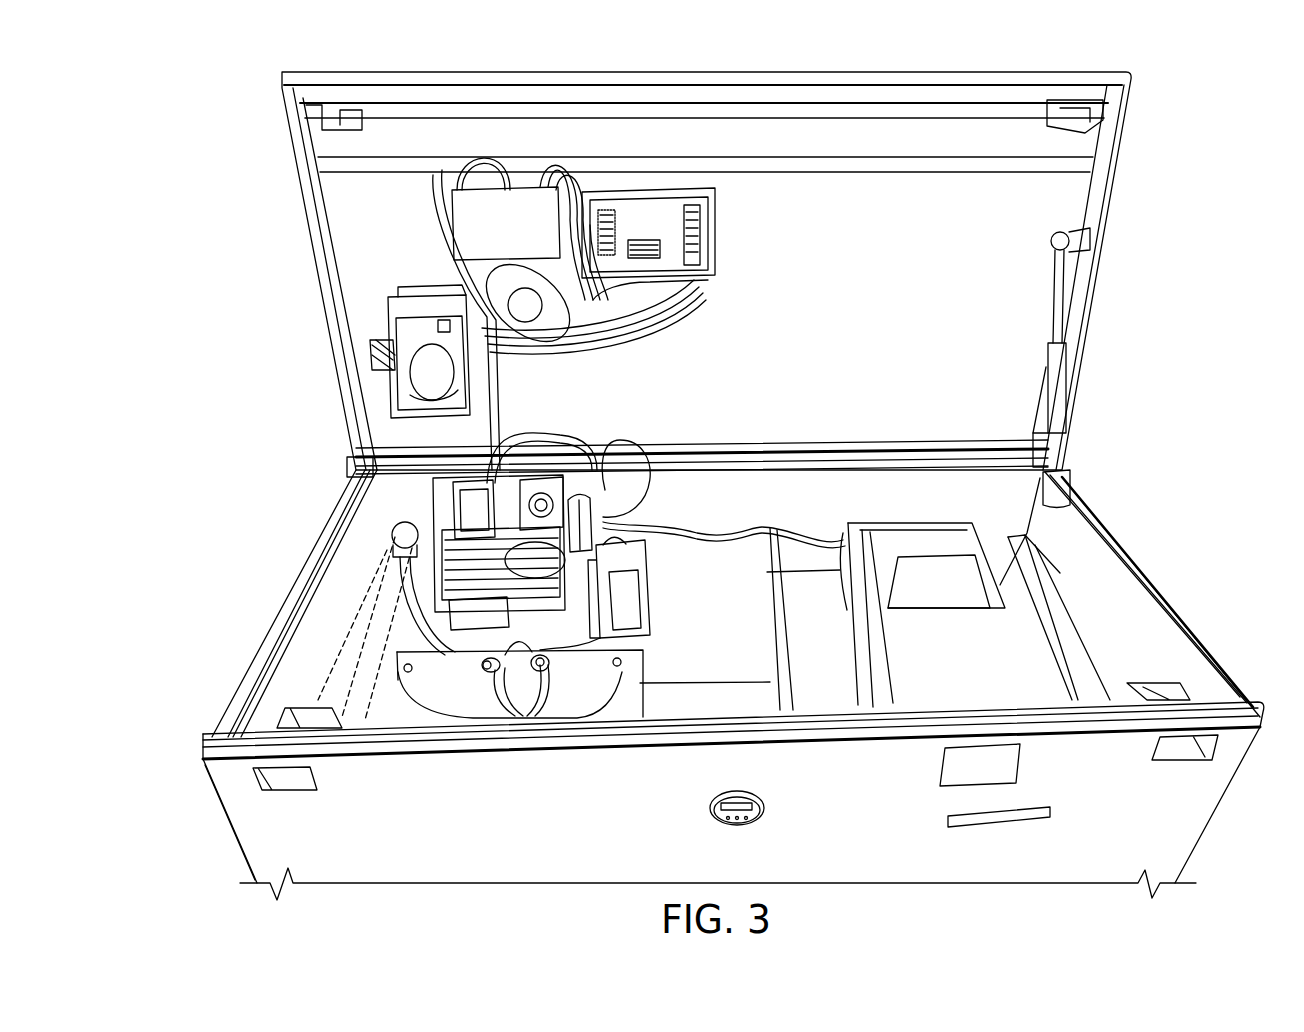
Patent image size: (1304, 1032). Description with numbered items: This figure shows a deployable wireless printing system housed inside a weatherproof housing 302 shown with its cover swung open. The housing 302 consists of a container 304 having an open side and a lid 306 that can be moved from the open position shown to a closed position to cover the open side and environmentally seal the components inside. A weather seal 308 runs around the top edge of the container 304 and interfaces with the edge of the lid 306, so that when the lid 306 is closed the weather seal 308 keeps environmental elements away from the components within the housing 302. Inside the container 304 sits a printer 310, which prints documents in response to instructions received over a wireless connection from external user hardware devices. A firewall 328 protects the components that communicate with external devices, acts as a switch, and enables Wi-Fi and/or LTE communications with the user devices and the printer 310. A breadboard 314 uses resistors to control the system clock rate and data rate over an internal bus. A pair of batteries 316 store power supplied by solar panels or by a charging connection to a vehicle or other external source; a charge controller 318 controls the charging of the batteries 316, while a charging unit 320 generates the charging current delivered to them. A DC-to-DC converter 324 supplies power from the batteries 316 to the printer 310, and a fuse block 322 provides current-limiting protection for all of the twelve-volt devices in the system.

The weatherproof housing 302 is at (1222, 806).
The container 304 is at (257, 837).
The lid 306 is at (703, 70).
The weather seal 308 is at (422, 744).
The printer 310 is at (1000, 663).
The breadboard 314 is at (388, 323).
The pair of batteries 316 is at (637, 660).
The charge controller 318 is at (483, 470).
The charging unit 320 is at (658, 583).
The fuse block 322 is at (610, 467).
The DC-to-DC converter 324 is at (463, 608).
The firewall 328 is at (717, 257).